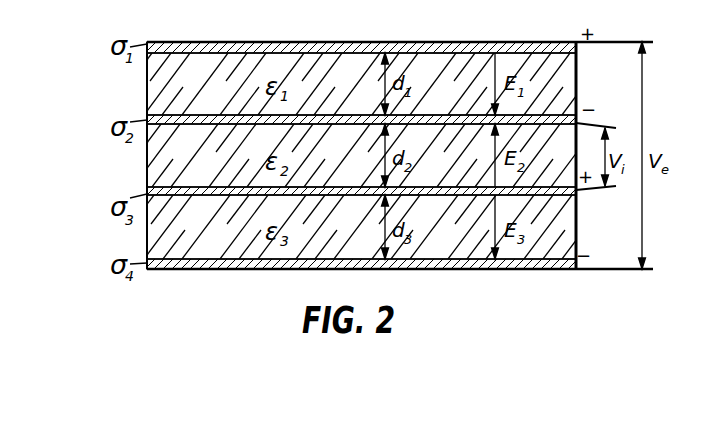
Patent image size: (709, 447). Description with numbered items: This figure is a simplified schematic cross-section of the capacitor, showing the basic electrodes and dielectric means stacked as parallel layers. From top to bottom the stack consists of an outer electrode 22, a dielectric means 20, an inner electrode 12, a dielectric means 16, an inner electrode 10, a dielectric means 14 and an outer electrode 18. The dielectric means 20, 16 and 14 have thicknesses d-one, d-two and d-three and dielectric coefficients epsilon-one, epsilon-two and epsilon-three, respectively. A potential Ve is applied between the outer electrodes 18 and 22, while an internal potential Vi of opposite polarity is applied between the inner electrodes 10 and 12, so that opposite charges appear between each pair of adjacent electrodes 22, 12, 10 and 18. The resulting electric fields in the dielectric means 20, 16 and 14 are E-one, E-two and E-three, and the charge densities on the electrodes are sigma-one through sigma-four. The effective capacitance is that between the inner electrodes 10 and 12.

The inner electrode 10 is at (164, 190).
The inner electrode 12 is at (148, 116).
The dielectric means 14 is at (560, 234).
The dielectric means 16 is at (560, 156).
The outer electrode 18 is at (212, 271).
The dielectric means 20 is at (572, 89).
The outer electrode 22 is at (457, 42).